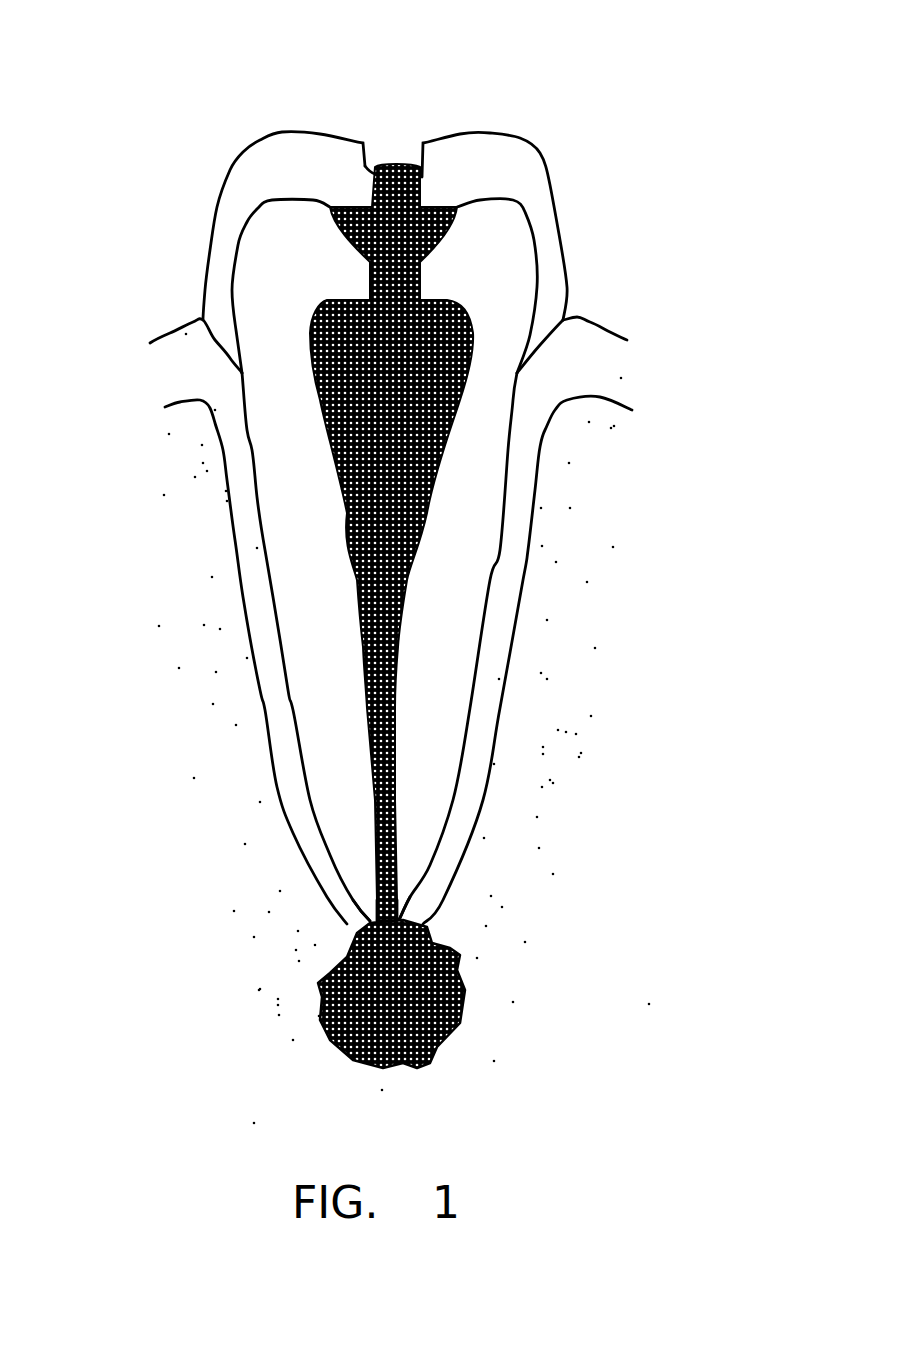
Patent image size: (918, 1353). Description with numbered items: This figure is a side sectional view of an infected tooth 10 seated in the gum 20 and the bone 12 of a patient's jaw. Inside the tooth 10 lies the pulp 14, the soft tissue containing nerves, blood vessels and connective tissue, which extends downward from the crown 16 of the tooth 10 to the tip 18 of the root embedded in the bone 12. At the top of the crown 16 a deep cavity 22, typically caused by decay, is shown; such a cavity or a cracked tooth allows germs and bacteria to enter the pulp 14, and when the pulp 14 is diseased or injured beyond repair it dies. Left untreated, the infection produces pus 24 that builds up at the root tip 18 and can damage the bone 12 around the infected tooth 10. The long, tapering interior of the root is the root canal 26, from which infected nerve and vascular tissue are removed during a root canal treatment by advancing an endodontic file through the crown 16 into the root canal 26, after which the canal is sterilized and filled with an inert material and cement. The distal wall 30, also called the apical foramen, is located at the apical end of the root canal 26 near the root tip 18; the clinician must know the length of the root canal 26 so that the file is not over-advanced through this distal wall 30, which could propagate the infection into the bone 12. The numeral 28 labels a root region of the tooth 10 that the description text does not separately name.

The tooth 10 is at (398, 487).
The bone 12 is at (233, 792).
The pulp 14 is at (386, 542).
The crown 16 is at (252, 175).
The tip of the root 18 is at (460, 925).
The gum 20 is at (583, 357).
The deep cavity 22 is at (397, 143).
The pus 24 is at (537, 1022).
The root canal 26 is at (427, 502).
The root 28 is at (315, 632).
The distal wall 30 is at (416, 896).